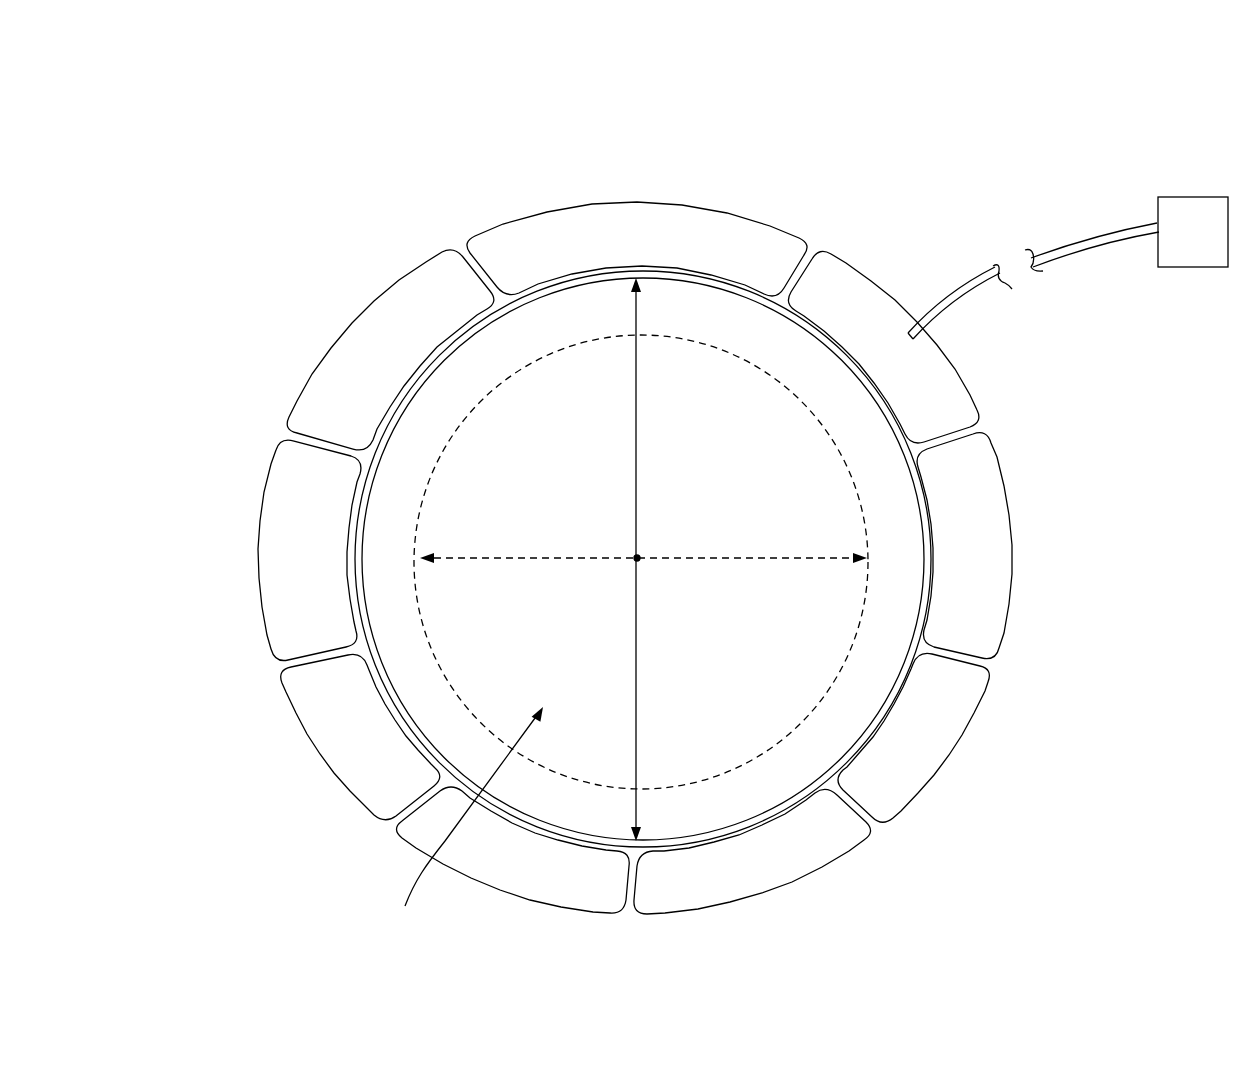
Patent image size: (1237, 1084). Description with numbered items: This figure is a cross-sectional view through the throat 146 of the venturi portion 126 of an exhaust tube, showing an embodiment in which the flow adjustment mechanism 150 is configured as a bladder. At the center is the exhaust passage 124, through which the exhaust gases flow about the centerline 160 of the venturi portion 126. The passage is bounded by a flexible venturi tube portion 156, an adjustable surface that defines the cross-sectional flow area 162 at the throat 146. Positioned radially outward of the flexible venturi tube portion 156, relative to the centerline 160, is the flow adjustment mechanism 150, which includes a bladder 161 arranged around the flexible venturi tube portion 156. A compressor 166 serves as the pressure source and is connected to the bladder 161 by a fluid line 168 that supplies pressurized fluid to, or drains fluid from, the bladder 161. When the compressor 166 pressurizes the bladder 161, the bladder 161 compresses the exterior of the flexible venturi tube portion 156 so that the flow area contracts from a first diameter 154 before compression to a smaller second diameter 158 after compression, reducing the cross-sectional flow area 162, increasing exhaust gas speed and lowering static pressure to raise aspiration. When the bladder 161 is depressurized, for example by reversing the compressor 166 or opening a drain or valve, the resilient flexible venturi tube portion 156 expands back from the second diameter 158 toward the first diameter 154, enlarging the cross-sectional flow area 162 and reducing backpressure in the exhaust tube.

The exhaust passage 124 is at (262, 741).
The venturi portion 126 is at (252, 164).
The throat 146 is at (850, 105).
The flow adjustment mechanism 150 is at (973, 131).
The first diameter 154 is at (640, 747).
The flexible venturi tube portion 156 is at (377, 496).
The second diameter 158 is at (490, 560).
The centerline 160 is at (638, 557).
The bladder 161 is at (972, 416).
The cross-sectional flow area 162 is at (463, 826).
The compressor 166 is at (1210, 250).
The fluid line 168 is at (961, 288).